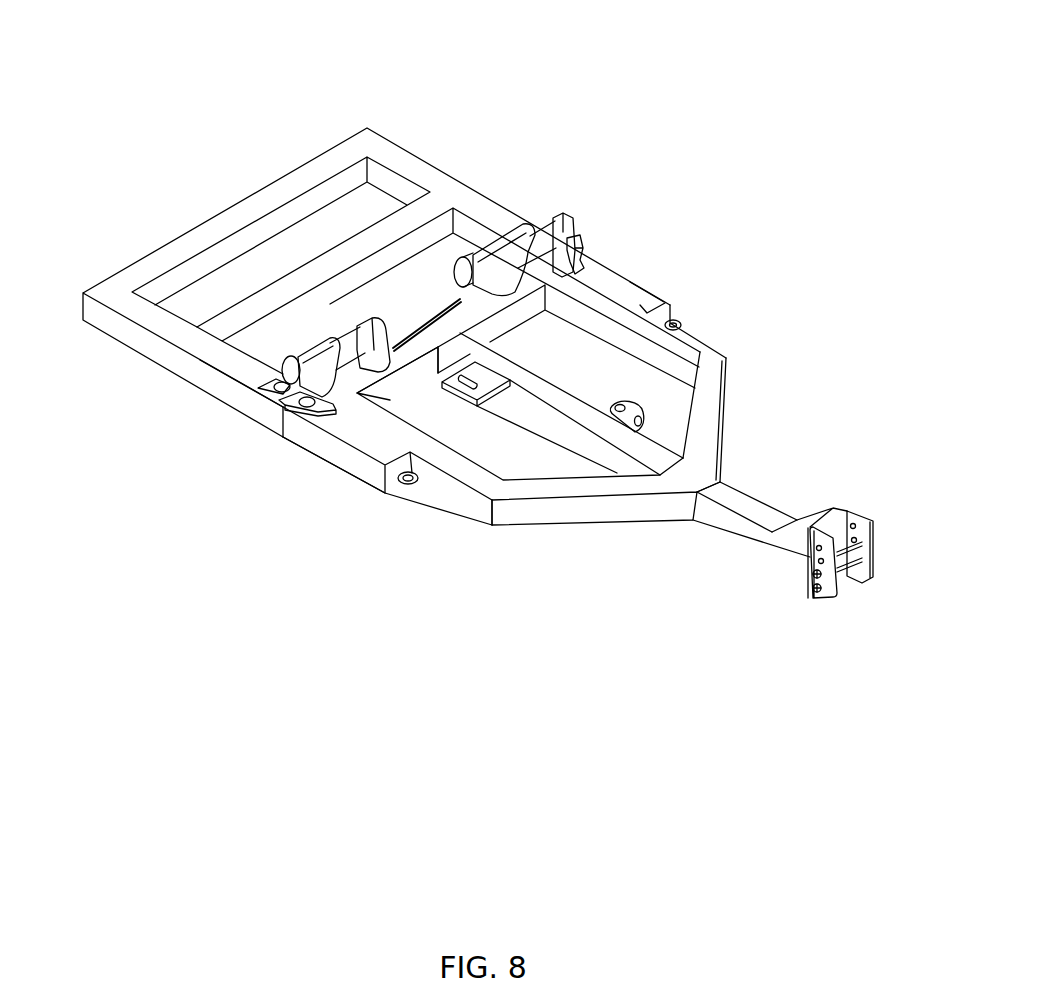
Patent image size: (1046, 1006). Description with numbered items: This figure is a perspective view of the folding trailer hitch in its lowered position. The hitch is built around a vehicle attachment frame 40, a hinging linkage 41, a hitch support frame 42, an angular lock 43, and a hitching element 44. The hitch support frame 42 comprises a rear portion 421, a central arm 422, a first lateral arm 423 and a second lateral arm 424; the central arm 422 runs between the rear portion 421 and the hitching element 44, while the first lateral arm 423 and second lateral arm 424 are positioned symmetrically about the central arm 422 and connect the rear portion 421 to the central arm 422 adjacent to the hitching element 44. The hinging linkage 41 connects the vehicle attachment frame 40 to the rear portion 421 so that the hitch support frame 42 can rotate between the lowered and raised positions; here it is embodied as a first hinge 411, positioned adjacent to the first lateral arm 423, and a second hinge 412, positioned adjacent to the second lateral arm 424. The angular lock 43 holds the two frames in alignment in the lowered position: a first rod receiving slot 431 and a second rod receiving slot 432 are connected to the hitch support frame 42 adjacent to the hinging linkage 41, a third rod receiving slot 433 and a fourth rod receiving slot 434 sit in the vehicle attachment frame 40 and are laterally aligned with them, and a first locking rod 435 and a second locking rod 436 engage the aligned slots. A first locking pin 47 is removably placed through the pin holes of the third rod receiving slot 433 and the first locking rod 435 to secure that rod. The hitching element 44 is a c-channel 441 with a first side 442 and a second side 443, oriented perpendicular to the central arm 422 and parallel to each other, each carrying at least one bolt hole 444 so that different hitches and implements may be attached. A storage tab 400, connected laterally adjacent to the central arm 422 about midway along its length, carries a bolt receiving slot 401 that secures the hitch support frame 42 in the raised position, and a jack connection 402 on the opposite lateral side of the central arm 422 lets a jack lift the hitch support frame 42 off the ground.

The vehicle attachment frame 40 is at (257, 148).
The hinging linkage 41 is at (585, 222).
The hitch support frame 42 is at (624, 562).
The angular lock 43 is at (300, 457).
The hitching element 44 is at (813, 632).
The first locking pin 47 is at (262, 400).
The storage tab 400 is at (470, 393).
The bolt receiving slot 401 is at (473, 379).
The jack connection 402 is at (618, 412).
The first hinge 411 is at (370, 333).
The second hinge 412 is at (498, 238).
The rear portion 421 is at (407, 361).
The central arm 422 is at (567, 412).
The first lateral arm 423 is at (467, 483).
The second lateral arm 424 is at (700, 360).
The first rod receiving slot 431 is at (353, 458).
The second rod receiving slot 432 is at (623, 289).
The third rod receiving slot 433 is at (248, 373).
The fourth rod receiving slot 434 is at (545, 232).
The first locking rod 435 is at (390, 485).
The second locking rod 436 is at (682, 316).
The c-channel 441 is at (819, 518).
The first side 442 is at (830, 592).
The second side 443 is at (870, 522).
The bolt hole 444 is at (850, 510).